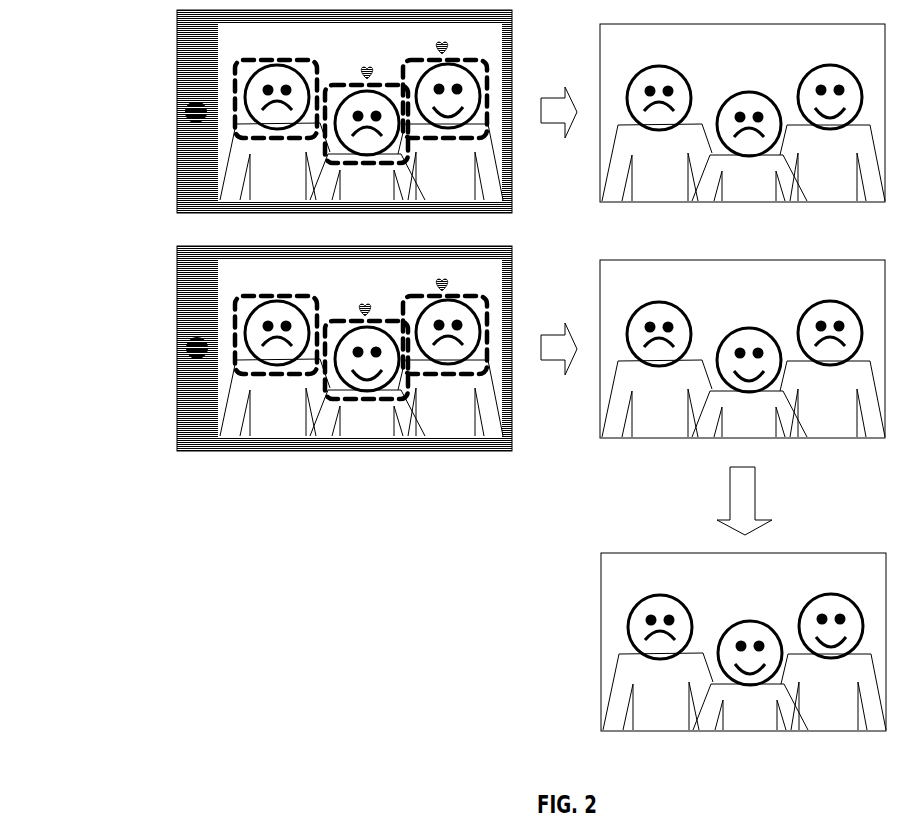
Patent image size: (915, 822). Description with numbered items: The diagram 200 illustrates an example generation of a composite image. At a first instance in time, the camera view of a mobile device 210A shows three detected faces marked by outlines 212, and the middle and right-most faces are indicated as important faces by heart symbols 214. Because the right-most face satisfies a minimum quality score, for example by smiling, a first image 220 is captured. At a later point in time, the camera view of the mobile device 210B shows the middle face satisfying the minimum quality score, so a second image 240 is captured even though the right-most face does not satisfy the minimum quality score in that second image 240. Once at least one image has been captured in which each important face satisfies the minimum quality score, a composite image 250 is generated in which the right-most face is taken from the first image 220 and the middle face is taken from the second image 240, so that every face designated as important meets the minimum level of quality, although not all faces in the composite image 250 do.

The diagram 200 is at (65, 48).
The mobile device 210A is at (178, 45).
The mobile device 210B is at (178, 300).
The outlines 212 is at (469, 42).
The heart symbols 214 is at (437, 47).
The first image 220 is at (600, 42).
The second image 240 is at (600, 297).
The composite image 250 is at (602, 593).